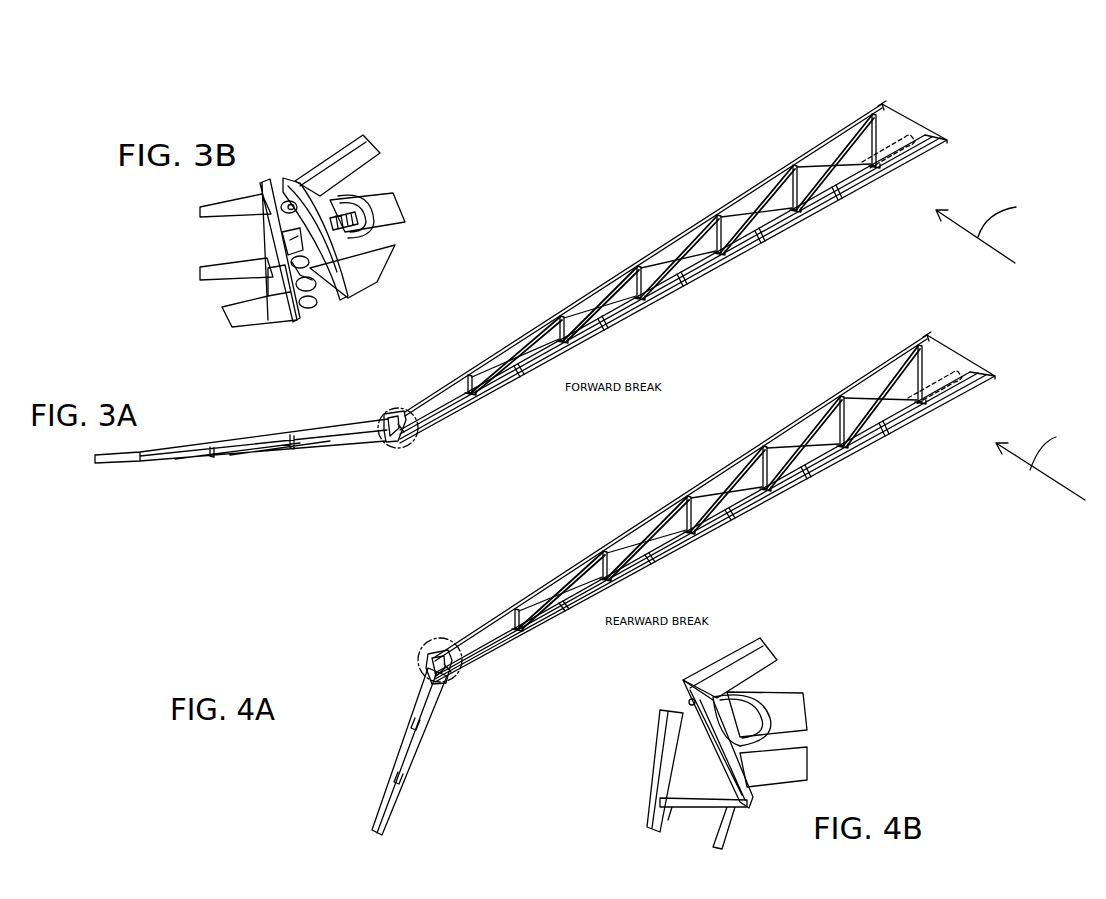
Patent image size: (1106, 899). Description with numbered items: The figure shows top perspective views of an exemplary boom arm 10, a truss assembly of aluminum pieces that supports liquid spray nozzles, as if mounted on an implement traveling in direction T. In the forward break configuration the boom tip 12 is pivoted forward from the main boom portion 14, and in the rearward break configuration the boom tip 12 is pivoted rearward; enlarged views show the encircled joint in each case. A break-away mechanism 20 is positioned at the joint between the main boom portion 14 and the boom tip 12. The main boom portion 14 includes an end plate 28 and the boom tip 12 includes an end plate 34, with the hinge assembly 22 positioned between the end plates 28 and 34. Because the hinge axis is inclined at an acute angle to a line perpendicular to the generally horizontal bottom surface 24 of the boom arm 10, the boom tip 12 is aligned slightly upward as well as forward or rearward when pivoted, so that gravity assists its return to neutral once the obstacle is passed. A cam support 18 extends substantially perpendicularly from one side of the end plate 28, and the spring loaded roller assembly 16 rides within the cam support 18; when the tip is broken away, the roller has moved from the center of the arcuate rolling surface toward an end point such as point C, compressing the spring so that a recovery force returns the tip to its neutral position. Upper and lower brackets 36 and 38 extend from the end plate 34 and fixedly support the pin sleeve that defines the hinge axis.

In FIG. 3A, the boom arm 10 is at (966, 108).
In FIG. 4A, the boom arm 10 is at (986, 340).
In FIG. 3A, the boom tip 12 is at (190, 463).
In FIG. 3B, the boom tip 12 is at (196, 278).
In FIG. 4A, the boom tip 12 is at (409, 752).
In FIG. 4B, the boom tip 12 is at (641, 825).
In FIG. 3A, the main boom portion 14 is at (646, 257).
In FIG. 3B, the main boom portion 14 is at (341, 145).
In FIG. 4A, the main boom portion 14 is at (758, 441).
In FIG. 4B, the main boom portion 14 is at (761, 641).
In FIG. 3B, the spring loaded roller assembly 16 is at (347, 206).
In FIG. 3B, the cam support 18 is at (366, 206).
In FIG. 4B, the cam support 18 is at (764, 706).
In FIG. 3A, the break-away mechanism 20 is at (386, 402).
In FIG. 3B, the break-away mechanism 20 is at (393, 117).
In FIG. 4A, the break-away mechanism 20 is at (432, 646).
In FIG. 4B, the break-away mechanism 20 is at (829, 655).
In FIG. 3B, the hinge assembly 22 is at (278, 237).
In FIG. 3A, the bottom surface 24 is at (787, 231).
In FIG. 4A, the bottom surface 24 is at (883, 443).
In FIG. 3B, the end plate 28 is at (340, 282).
In FIG. 4B, the end plate 28 is at (750, 806).
In FIG. 3B, the end plate 34 is at (262, 182).
In FIG. 4B, the end plate 34 is at (696, 769).
In FIG. 3B, the upper bracket 36 is at (270, 207).
In FIG. 3B, the lower bracket 38 is at (286, 268).
In FIG. 3A, the direction of travel T is at (991, 230).
In FIG. 4A, the direction of travel T is at (1040, 460).
In FIG. 3B, the roller end point c C is at (392, 214).